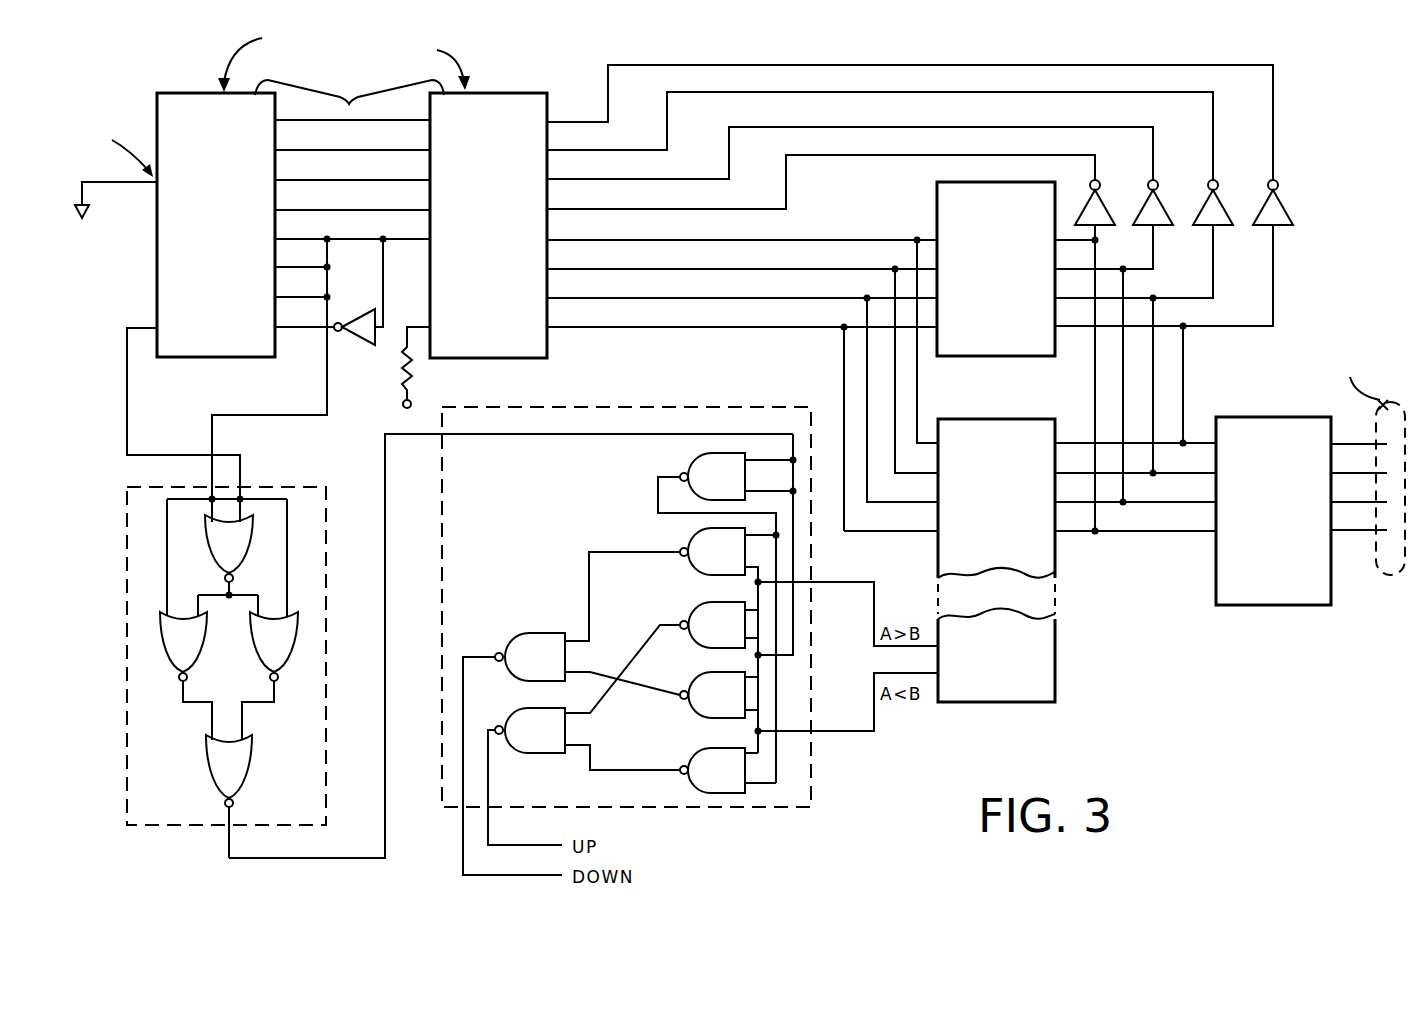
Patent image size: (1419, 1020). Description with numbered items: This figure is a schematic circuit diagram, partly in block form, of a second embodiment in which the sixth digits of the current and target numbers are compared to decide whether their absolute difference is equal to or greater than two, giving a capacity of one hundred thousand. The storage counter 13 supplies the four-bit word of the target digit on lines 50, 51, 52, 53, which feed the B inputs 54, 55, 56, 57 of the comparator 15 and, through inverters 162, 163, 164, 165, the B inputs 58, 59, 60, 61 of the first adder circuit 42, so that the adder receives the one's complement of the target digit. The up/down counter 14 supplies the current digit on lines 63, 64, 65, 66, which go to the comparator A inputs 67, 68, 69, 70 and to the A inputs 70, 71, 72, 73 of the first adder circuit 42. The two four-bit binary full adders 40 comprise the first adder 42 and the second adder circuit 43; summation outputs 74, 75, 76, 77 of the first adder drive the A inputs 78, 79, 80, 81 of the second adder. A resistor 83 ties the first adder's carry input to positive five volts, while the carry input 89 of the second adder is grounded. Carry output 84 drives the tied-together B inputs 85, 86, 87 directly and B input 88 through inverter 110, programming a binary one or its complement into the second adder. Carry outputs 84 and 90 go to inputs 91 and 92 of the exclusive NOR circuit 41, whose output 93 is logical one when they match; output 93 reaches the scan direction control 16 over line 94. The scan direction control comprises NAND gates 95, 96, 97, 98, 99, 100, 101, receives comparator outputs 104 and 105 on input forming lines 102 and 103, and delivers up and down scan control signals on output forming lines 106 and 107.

The storage counter 13 is at (1268, 418).
The up/down counter 14 is at (980, 357).
The comparator 15 is at (988, 418).
The scan direction control 16 is at (550, 503).
The 4 bit binary full adders 40 is at (344, 62).
The exclusive NOR circuit 41 is at (127, 645).
The first adder circuit 42 is at (490, 103).
The second adder circuit 43 is at (194, 102).
The line 50 is at (1160, 446).
The line 51 is at (1135, 476).
The line 52 is at (1135, 505).
The line 53 is at (1135, 534).
The comparator B input 54 is at (1058, 446).
The comparator B input 55 is at (1058, 476).
The comparator B input 56 is at (1058, 505).
The comparator B input 57 is at (1058, 534).
The B input of first adder 58 is at (555, 124).
The B input of first adder 59 is at (555, 152).
The B input of first adder 60 is at (555, 181).
The B input of first adder 61 is at (555, 211).
The line 63 is at (727, 242).
The line 64 is at (727, 271).
The line 65 is at (727, 300).
The line 66 is at (727, 329).
The comparator A input 67 is at (937, 446).
The comparator A input 68 is at (937, 476).
The comparator A input 69 is at (937, 505).
The A input 70 is at (555, 242).
The A input of first adder 71 is at (555, 271).
The A input of first adder 72 is at (555, 300).
The A input of first adder 73 is at (555, 329).
The summation output of first adder 74 is at (428, 122).
The summation output of first adder 75 is at (428, 152).
The summation output of first adder 76 is at (428, 182).
The summation output of first adder 77 is at (428, 212).
The A input of second adder 78 is at (281, 121).
The A input of second adder 79 is at (281, 151).
The A input of second adder 80 is at (281, 181).
The A input of second adder 81 is at (281, 211).
The resistor 83 is at (414, 372).
The carry output of first adder 84 is at (428, 241).
The B input of second adder 85 is at (279, 241).
The B input of second adder 86 is at (279, 269).
The B input of second adder 87 is at (279, 299).
The B input of second adder 88 is at (279, 329).
The carry input of second adder 89 is at (156, 180).
The carry output of second adder 90 is at (152, 327).
The exclusive NOR input 91 is at (211, 496).
The exclusive NOR input 92 is at (241, 496).
The exclusive NOR output 93 is at (227, 810).
The line 94 is at (298, 860).
The NAND gate 95 is at (690, 468).
The NAND gate 96 is at (696, 536).
The NAND gate 97 is at (700, 602).
The NAND gate 98 is at (532, 636).
The NAND gate 99 is at (703, 672).
The NAND gate 100 is at (540, 715).
The NAND gate 101 is at (702, 750).
The input forming line 102 is at (793, 734).
The input forming line 103 is at (840, 584).
The comparator output 104 is at (940, 688).
The comparator output 105 is at (937, 652).
The output forming line 106 is at (490, 776).
The output forming line 107 is at (465, 690).
The inverter 110 is at (348, 340).
The inverter 162 is at (1286, 208).
The inverter 163 is at (1226, 208).
The inverter 164 is at (1166, 208).
The inverter 165 is at (1106, 208).